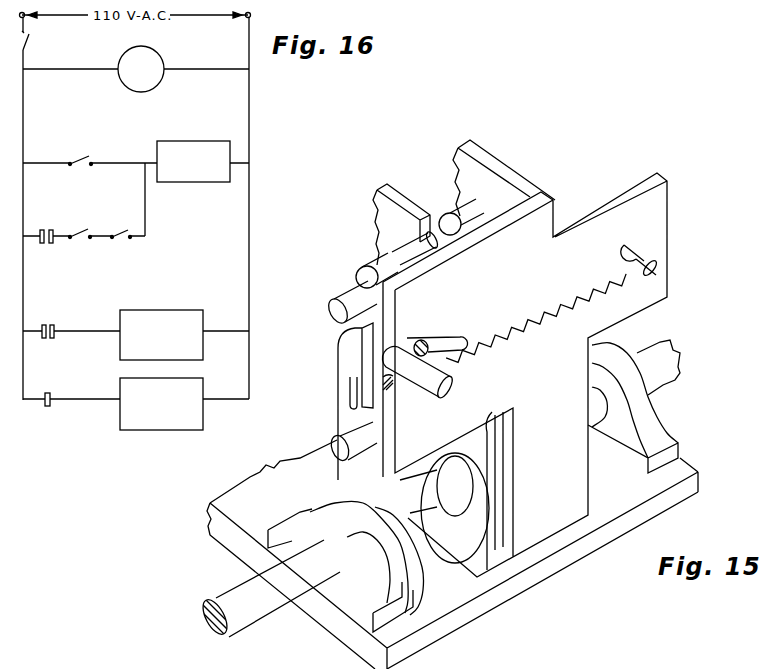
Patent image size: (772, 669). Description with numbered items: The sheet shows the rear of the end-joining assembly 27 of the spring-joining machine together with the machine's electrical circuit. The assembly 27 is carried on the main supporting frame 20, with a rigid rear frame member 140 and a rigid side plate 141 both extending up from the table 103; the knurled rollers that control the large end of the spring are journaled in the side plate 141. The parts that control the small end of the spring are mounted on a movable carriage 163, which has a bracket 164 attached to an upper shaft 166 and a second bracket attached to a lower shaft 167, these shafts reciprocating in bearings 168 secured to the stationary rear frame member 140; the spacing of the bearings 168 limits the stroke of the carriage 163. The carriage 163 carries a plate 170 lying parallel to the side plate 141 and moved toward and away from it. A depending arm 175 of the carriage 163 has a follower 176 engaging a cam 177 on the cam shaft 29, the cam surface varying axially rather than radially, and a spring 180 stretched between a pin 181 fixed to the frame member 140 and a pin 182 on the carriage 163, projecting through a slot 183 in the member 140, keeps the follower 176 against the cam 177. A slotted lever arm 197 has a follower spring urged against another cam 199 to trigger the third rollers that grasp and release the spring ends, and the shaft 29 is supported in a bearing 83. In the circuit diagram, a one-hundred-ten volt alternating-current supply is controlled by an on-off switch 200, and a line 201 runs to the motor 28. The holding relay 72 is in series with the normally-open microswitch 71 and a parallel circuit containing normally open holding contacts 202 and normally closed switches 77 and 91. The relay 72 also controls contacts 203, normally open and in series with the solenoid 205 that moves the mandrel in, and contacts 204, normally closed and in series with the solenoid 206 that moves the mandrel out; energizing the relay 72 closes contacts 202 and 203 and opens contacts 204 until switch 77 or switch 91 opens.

In FIG. 16, the on-off switch 200 is at (33, 41).
In FIG. 16, the line 201 is at (63, 69).
In FIG. 16, the motor 28 is at (120, 80).
In FIG. 16, the microswitch 71 is at (82, 160).
In FIG. 16, the holding relay 72 is at (208, 145).
In FIG. 16, the microswitch 77 is at (80, 233).
In FIG. 16, the switch 91 is at (118, 233).
In FIG. 16, the holding contacts 202 is at (46, 244).
In FIG. 16, the contacts 203 is at (47, 339).
In FIG. 16, the contacts 204 is at (47, 406).
In FIG. 16, the solenoid 205 is at (187, 310).
In FIG. 16, the solenoid 206 is at (188, 430).
In FIG. 15, the main supporting frame 20 is at (565, 567).
In FIG. 15, the table 103 is at (277, 501).
In FIG. 15, the cam shaft 29 is at (242, 590).
In FIG. 15, the bearing block 83 is at (281, 528).
In FIG. 15, the follower 176 is at (362, 520).
In FIG. 15, the cam 177 is at (382, 540).
In FIG. 15, the cam 199 is at (480, 538).
In FIG. 15, the slotted lever arm 197 is at (493, 459).
In FIG. 15, the rear frame member 140 is at (534, 267).
In FIG. 15, the side plate 141 is at (503, 164).
In FIG. 15, the plate 170 is at (377, 229).
In FIG. 15, the bearings 168 is at (363, 271).
In FIG. 15, the bracket 164 is at (412, 248).
In FIG. 15, the upper shaft 166 is at (332, 314).
In FIG. 15, the carriage 163 is at (338, 373).
In FIG. 15, the depending arm 175 is at (338, 406).
In FIG. 15, the lower shaft 167 is at (336, 444).
In FIG. 15, the pin 182 is at (416, 344).
In FIG. 15, the slot 183 is at (449, 344).
In FIG. 15, the spring 180 is at (538, 332).
In FIG. 15, the pin 181 is at (633, 266).
In FIG. 15, the end-joining assembly 27 is at (591, 162).